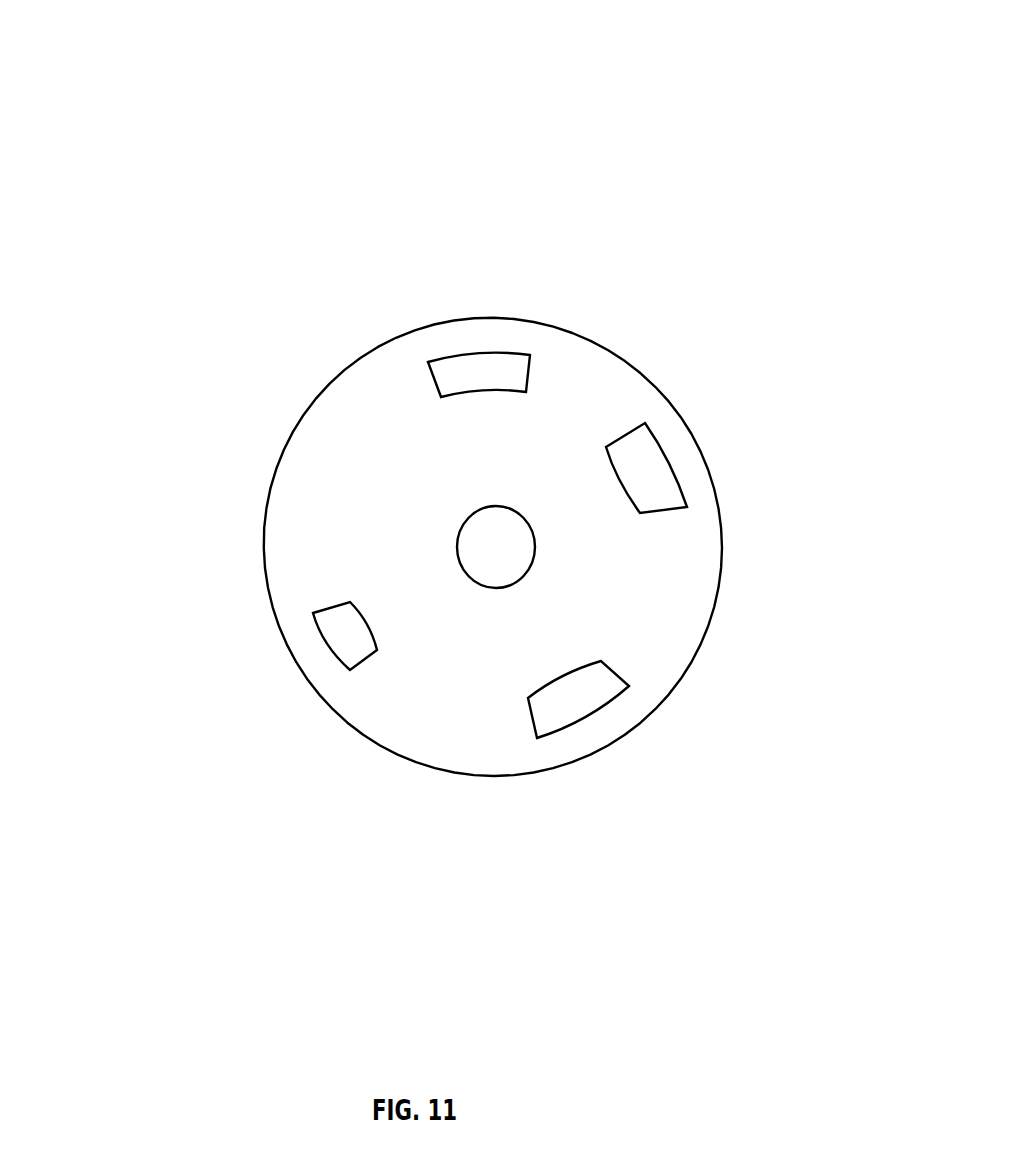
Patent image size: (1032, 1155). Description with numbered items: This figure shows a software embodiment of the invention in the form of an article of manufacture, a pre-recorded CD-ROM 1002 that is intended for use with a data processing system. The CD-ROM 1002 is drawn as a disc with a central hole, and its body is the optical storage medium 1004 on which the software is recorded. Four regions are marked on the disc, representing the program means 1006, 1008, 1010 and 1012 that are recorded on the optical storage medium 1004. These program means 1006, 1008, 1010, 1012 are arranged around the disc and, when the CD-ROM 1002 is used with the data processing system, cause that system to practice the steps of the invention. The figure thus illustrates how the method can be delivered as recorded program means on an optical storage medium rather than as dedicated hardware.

The pre-recorded CD-ROM 1002 is at (560, 158).
The optical storage medium 1004 is at (663, 561).
The program means 1006 is at (660, 463).
The program means 1008 is at (510, 358).
The program means 1010 is at (330, 645).
The program means 1012 is at (570, 722).